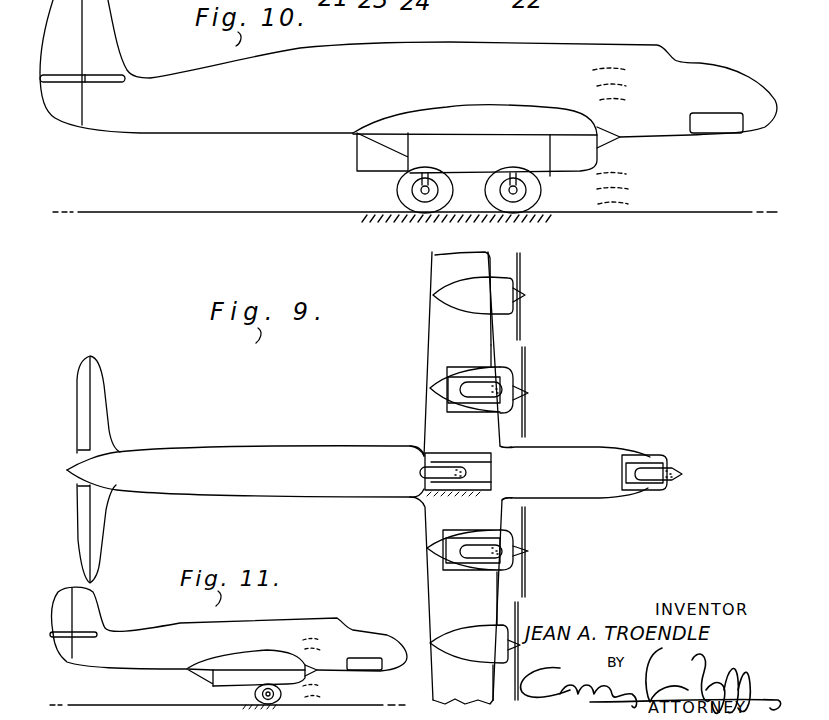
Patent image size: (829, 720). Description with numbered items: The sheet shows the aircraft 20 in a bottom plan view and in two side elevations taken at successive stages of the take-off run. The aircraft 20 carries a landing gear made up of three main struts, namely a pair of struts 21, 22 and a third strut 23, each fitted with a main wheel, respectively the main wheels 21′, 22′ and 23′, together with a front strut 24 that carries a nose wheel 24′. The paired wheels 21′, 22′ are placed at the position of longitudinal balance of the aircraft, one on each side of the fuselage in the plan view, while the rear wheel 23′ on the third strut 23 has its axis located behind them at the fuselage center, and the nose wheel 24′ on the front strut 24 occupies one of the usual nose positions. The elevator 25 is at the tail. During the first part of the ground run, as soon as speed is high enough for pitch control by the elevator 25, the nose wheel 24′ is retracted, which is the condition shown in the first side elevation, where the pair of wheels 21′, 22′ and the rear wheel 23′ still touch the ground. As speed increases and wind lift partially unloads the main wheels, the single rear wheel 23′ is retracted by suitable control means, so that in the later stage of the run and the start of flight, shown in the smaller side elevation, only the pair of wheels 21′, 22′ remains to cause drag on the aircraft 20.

In FIG. 10, the aircraft 20 is at (303, 58).
In FIG. 9, the aircraft 20 is at (258, 457).
In FIG. 11, the aircraft 20 is at (160, 637).
In FIG. 10, the strut 21 is at (486, 158).
In FIG. 9, the strut 21 is at (479, 399).
In FIG. 11, the strut 21 is at (234, 694).
In FIG. 10, the main wheel 21' is at (535, 209).
In FIG. 9, the main wheel 21' is at (474, 366).
In FIG. 11, the main wheel 21' is at (252, 675).
In FIG. 9, the strut 22 is at (477, 559).
In FIG. 9, the main wheel 22' is at (474, 527).
In FIG. 10, the third strut 23 is at (385, 191).
In FIG. 10, the rear wheel 23' is at (419, 211).
In FIG. 9, the rear wheel 23' is at (425, 474).
In FIG. 9, the front strut 24 is at (654, 452).
In FIG. 9, the nose wheel 24' is at (658, 501).
In FIG. 10, the elevator 25 is at (58, 82).
In FIG. 9, the elevator 25 is at (80, 531).
In FIG. 11, the elevator 25 is at (65, 638).